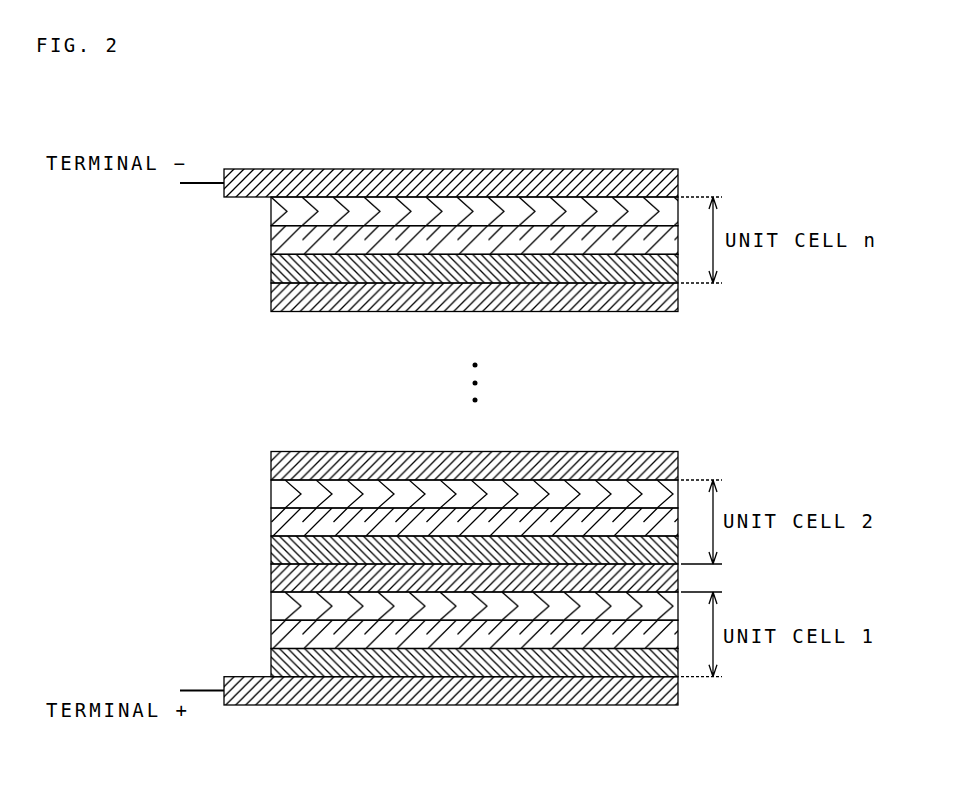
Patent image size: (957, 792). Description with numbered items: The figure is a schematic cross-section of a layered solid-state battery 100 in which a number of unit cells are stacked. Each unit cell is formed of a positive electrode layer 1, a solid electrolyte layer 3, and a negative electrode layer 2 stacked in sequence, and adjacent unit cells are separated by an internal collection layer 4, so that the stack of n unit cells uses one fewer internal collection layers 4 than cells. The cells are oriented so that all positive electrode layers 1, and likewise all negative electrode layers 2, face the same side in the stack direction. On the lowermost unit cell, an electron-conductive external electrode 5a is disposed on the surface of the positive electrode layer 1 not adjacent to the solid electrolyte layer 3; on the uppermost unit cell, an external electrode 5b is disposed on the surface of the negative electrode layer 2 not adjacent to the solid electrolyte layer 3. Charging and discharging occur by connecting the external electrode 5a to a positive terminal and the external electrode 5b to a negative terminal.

The layered solid-state battery 100 is at (578, 136).
The positive electrode layer 1 is at (283, 269).
The negative electrode layer 2 is at (281, 213).
The solid electrolyte layer 3 is at (284, 241).
The internal collection layer 4 is at (281, 297).
The external electrode 5a is at (288, 692).
The external electrode 5b is at (288, 181).